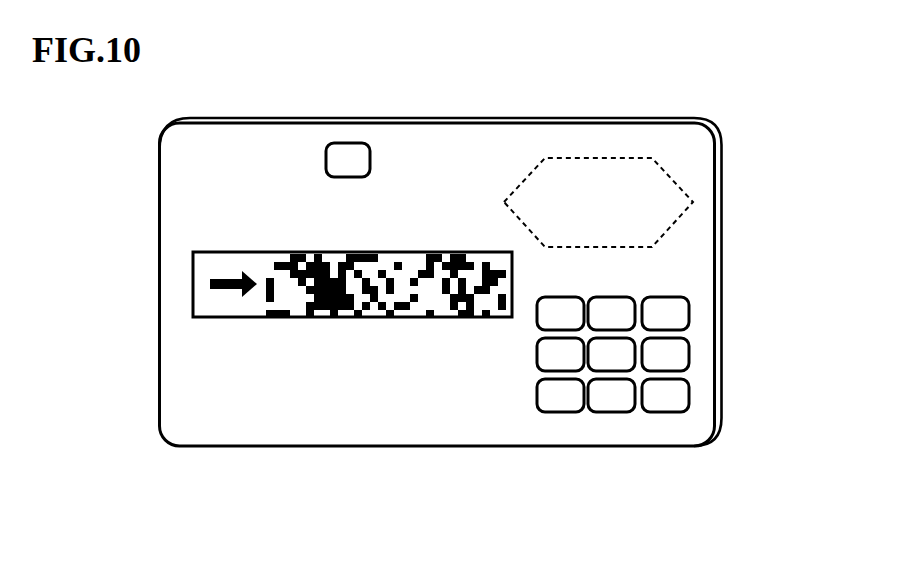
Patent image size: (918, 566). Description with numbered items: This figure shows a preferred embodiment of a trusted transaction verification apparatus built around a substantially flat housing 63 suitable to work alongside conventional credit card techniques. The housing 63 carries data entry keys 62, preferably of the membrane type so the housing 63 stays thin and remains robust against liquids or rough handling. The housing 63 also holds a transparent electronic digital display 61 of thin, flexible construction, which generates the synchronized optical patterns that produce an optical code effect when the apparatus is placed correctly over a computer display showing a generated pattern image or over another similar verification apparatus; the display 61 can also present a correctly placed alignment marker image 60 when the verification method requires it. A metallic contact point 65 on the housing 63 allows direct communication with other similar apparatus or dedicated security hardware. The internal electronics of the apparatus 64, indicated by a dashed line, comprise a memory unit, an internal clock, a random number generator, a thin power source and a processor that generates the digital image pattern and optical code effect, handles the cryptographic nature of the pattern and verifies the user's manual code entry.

The alignment marker image 60 is at (218, 290).
The transparent electronic digital display 61 is at (367, 310).
The data entry keys 62 is at (672, 397).
The housing 63 is at (690, 155).
The internal electronics of the apparatus 64 is at (572, 170).
The metallic contact point 65 is at (328, 142).